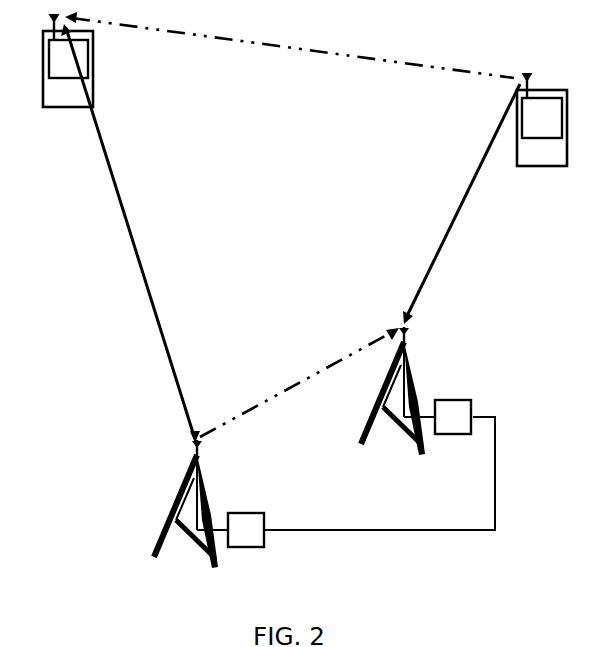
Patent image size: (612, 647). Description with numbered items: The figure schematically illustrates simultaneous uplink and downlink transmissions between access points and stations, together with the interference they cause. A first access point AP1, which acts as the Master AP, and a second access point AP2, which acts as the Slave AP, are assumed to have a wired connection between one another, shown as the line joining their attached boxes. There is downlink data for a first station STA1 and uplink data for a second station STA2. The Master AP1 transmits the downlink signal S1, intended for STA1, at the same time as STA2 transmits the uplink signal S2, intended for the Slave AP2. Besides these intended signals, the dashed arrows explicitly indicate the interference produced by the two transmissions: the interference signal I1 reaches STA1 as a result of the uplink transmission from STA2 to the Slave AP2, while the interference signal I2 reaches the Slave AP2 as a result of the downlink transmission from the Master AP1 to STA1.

The first station STA1 is at (57, 76).
The second station STA2 is at (532, 134).
The first access point (Master AP) AP1 is at (311, 503).
The second access point (Slave AP) AP2 is at (398, 403).
The downlink signal S1 is at (130, 233).
The uplink signal S2 is at (461, 204).
The interference signal for STA1 I1 is at (289, 53).
The interference signal for Slave AP2 I2 is at (299, 383).